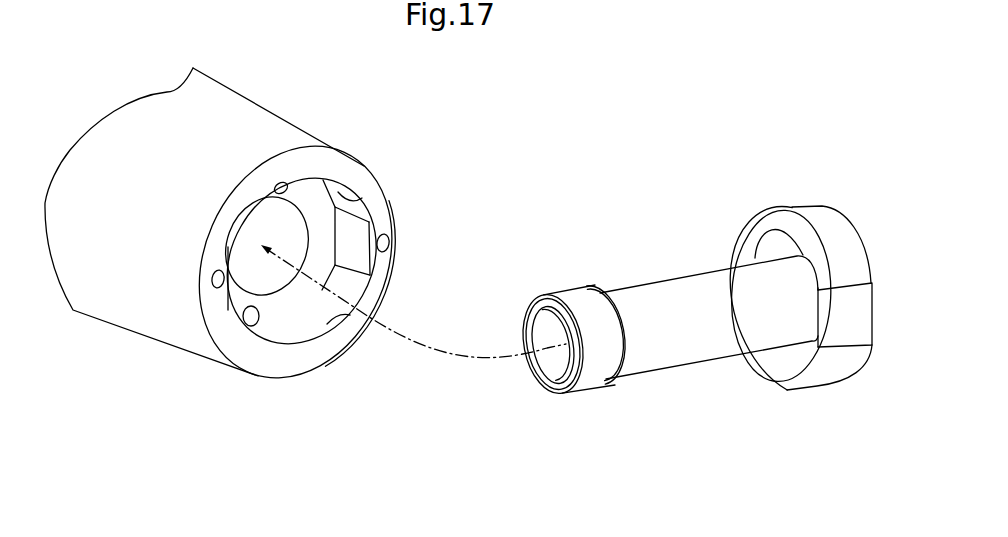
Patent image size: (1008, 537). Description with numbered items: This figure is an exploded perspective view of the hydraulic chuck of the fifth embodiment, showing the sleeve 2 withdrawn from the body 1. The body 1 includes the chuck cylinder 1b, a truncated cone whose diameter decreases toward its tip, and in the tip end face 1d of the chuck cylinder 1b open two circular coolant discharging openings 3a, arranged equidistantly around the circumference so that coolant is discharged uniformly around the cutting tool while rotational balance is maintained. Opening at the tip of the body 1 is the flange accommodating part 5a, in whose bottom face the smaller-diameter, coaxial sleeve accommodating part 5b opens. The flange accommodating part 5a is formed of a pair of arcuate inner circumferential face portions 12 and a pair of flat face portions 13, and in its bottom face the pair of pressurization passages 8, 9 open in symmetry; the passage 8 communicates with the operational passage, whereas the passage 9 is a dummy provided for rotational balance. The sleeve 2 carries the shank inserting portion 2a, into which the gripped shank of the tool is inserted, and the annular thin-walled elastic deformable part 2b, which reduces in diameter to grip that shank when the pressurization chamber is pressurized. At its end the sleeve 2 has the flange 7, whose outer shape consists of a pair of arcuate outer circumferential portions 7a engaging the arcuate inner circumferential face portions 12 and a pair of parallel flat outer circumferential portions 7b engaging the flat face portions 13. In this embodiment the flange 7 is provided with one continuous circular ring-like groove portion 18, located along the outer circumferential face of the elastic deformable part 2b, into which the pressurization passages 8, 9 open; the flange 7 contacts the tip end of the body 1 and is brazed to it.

The body 1 is at (204, 214).
The chuck cylinder 1b is at (98, 142).
The tip end face 1d is at (380, 268).
The sleeve 2 is at (666, 311).
The shank inserting portion 2a is at (557, 380).
The elastic deformable part 2b is at (692, 353).
The coolant discharging opening 3a is at (212, 279).
The flange accommodating part 5a is at (363, 313).
The sleeve accommodating part 5b is at (258, 289).
The flange 7 is at (762, 295).
The arcuate outer circumferential portion 7a is at (805, 214).
The flat outer circumferential portion 7b is at (729, 267).
The pressurization passage 8 is at (277, 185).
The pressurization passage 9 is at (250, 324).
The arcuate inner circumferential face portion 12 is at (358, 232).
The flat face portion 13 is at (358, 198).
The circular ring-like groove portion 18 is at (770, 240).